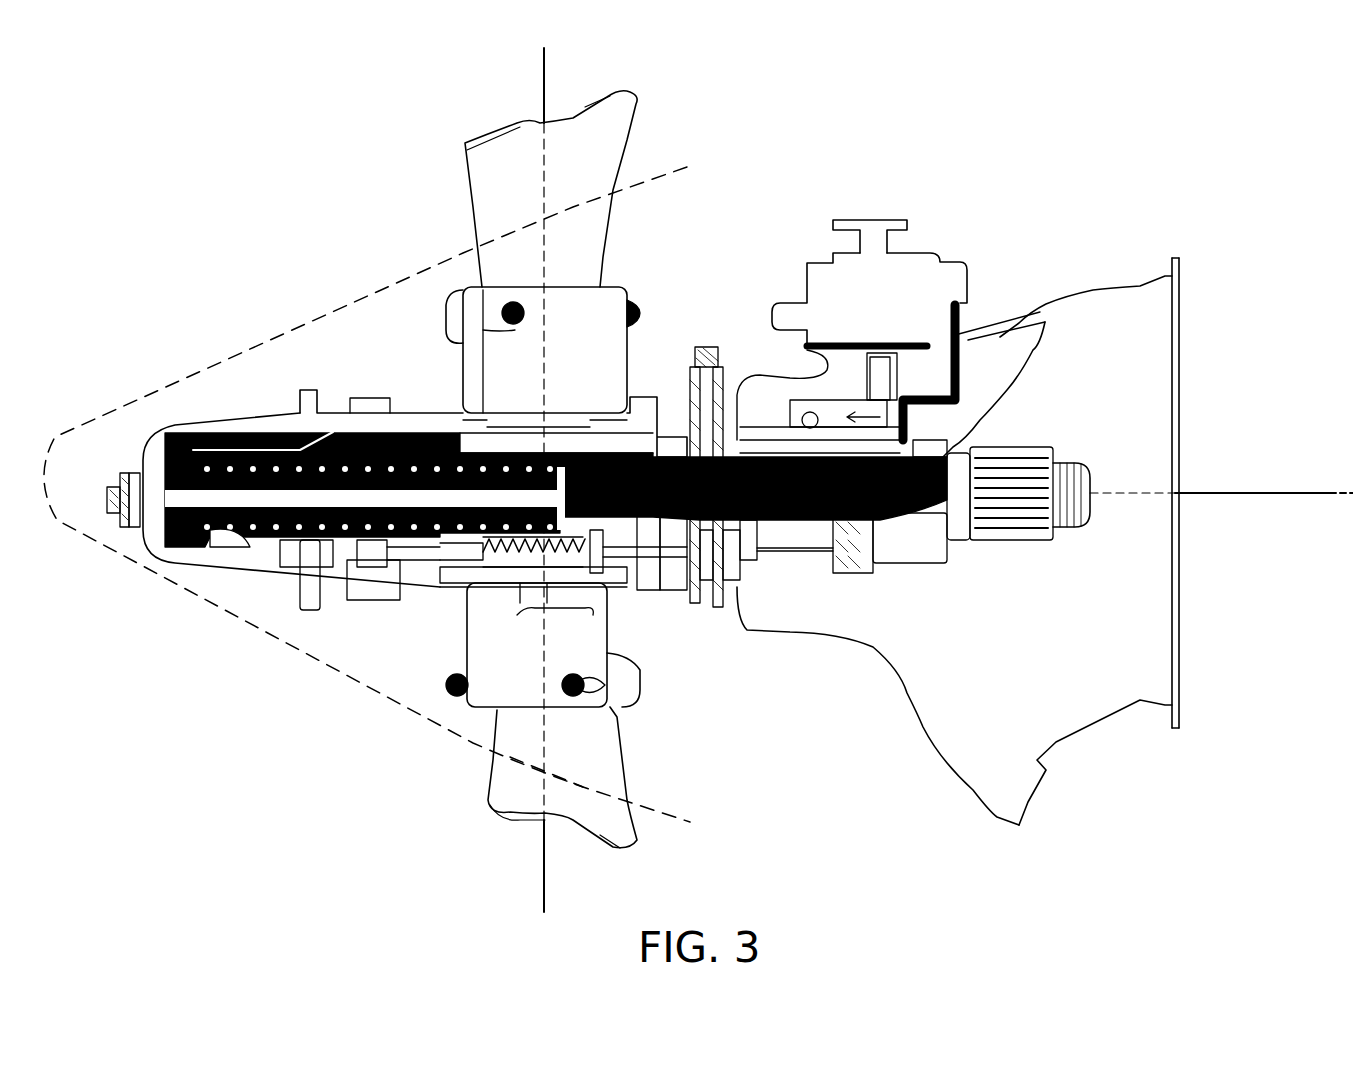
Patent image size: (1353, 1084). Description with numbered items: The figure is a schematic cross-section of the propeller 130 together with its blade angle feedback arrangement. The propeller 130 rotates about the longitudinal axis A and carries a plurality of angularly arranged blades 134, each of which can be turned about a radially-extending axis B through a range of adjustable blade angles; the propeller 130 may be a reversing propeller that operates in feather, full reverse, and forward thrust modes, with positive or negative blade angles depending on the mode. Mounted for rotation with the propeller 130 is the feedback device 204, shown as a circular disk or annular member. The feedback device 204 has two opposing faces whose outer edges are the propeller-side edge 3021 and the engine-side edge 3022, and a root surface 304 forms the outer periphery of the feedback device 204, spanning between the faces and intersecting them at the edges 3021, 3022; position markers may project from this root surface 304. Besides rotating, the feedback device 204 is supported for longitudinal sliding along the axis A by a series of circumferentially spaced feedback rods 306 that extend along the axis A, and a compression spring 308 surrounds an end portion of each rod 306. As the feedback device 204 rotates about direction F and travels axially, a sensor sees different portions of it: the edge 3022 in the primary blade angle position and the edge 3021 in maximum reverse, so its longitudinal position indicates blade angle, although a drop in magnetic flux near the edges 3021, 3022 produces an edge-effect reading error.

The propeller 130 is at (232, 252).
The blade 134 is at (463, 143).
The feedback device 204 is at (708, 342).
The root surface 304 is at (697, 437).
The feedback rod 306 is at (627, 560).
The compression spring 308 is at (465, 585).
The edge 3021 is at (687, 577).
The edge 3022 is at (717, 580).
The longitudinal axis A is at (1221, 475).
The radially-extending axis B is at (561, 477).
The direction F is at (733, 460).